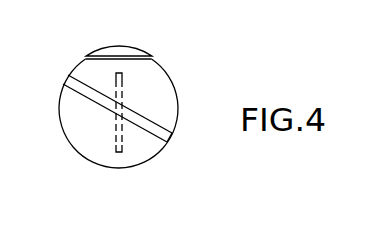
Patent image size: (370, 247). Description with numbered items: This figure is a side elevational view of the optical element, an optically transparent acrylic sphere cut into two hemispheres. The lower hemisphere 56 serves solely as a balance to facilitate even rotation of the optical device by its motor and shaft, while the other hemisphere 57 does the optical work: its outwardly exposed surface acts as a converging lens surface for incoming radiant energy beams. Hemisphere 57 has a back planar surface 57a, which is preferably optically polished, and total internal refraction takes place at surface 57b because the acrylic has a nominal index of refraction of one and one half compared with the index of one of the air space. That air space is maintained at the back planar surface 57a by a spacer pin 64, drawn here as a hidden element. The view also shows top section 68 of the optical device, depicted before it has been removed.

The lower hemisphere 56 is at (73, 148).
The hemisphere 57 is at (178, 111).
The back planar surface 57a is at (157, 118).
The surface 57b is at (163, 138).
The spacer pin 64 is at (123, 79).
The top section 68 is at (121, 47).